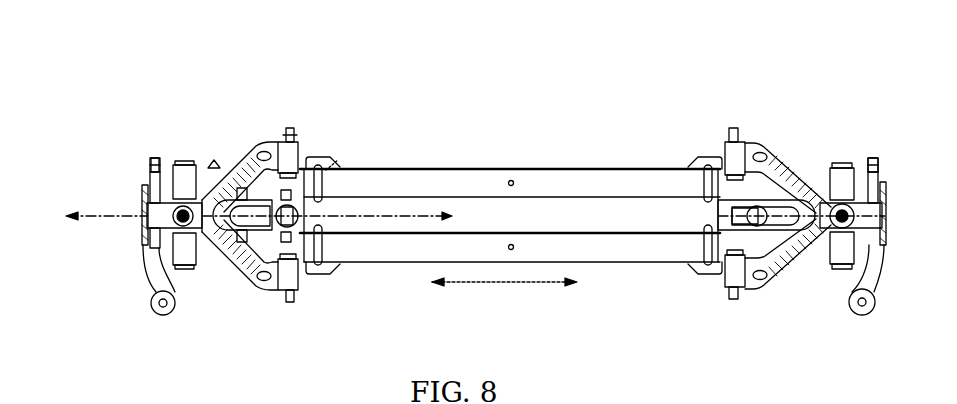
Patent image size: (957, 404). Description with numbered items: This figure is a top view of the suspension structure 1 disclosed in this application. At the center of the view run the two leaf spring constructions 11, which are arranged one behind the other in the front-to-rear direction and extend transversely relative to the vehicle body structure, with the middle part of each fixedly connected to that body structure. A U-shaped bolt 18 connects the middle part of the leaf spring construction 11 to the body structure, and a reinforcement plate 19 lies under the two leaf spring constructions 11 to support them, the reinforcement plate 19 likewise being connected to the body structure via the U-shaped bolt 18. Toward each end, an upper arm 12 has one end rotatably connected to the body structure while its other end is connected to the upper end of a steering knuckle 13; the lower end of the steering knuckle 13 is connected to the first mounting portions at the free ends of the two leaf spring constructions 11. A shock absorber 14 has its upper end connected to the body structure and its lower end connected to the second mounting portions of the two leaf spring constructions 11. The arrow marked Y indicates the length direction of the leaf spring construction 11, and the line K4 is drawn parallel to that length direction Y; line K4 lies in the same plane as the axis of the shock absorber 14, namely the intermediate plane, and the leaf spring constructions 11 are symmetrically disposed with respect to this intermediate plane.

The suspension structure 1 is at (523, 51).
The leaf spring construction 11 is at (490, 168).
The upper arm 12 is at (252, 145).
The steering knuckle 13 is at (143, 186).
The shock absorber 14 is at (213, 160).
The U-shaped bolt 18 is at (320, 178).
The reinforcement plate 19 is at (323, 272).
The line K4 is at (59, 217).
The length direction Y is at (515, 284).